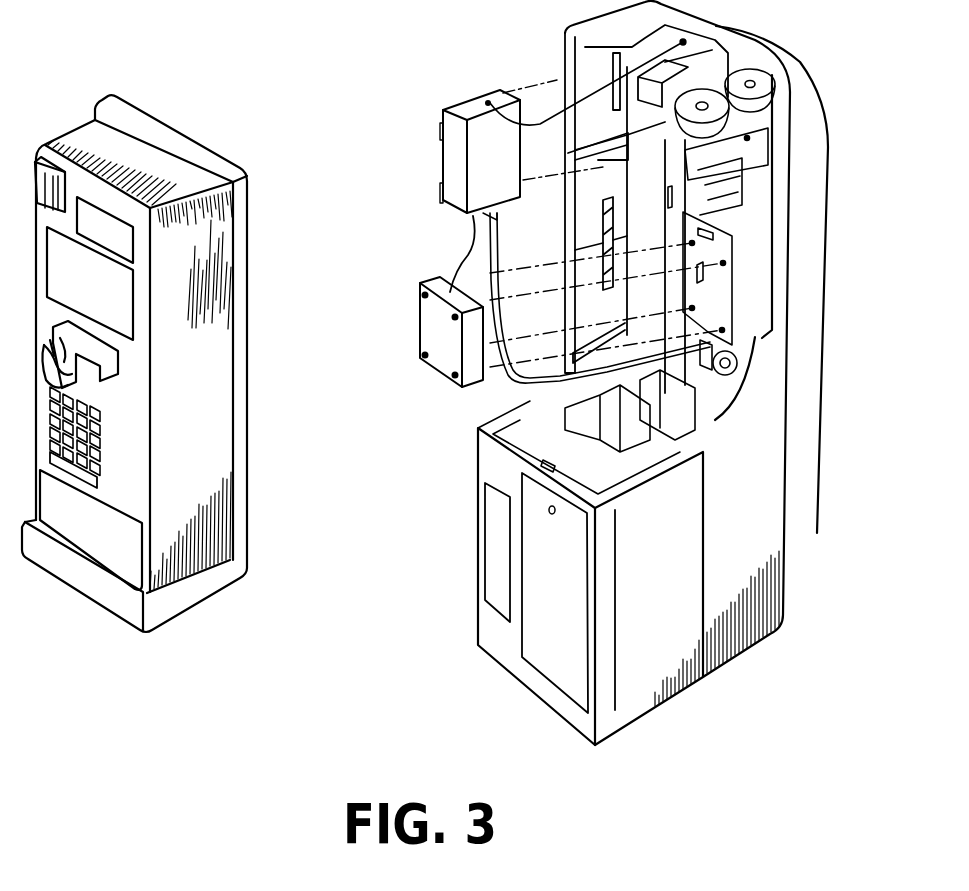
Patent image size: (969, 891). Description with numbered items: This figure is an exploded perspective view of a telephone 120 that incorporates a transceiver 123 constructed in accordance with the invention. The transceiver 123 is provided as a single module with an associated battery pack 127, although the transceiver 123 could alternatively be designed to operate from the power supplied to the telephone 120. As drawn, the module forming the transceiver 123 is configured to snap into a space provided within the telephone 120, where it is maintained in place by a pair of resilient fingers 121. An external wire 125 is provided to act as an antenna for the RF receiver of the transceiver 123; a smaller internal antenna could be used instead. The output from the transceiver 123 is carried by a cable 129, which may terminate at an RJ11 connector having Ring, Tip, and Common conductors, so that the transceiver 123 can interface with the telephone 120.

The telephone 120 is at (326, 687).
The resilient fingers 121 is at (543, 93).
The transceiver 123 is at (468, 108).
The external wire 125 is at (829, 137).
The battery pack 127 is at (430, 332).
The cable 129 is at (520, 387).